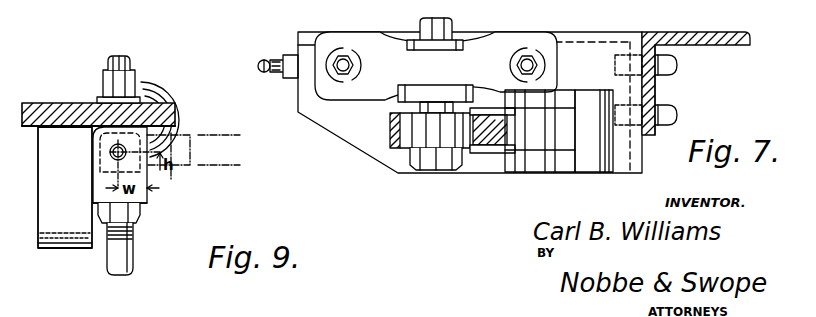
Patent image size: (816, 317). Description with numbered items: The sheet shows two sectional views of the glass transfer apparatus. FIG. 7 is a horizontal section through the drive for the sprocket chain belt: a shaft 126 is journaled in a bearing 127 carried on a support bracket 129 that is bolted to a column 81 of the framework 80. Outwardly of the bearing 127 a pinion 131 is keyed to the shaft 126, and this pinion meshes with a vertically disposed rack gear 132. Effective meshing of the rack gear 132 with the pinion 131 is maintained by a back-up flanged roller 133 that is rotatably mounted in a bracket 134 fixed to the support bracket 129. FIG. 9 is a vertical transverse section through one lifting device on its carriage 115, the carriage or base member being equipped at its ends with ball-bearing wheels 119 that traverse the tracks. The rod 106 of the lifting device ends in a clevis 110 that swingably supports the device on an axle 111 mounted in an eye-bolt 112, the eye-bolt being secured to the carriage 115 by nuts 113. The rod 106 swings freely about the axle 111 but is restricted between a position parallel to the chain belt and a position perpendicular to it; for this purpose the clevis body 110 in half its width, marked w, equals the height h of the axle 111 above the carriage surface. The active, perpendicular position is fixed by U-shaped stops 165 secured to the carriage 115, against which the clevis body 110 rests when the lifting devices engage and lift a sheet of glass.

In FIG. 7, the framework 80 is at (738, 42).
In FIG. 7, the column 81 is at (698, 46).
In FIG. 9, the rod 106 is at (118, 250).
In FIG. 9, the clevis 110 is at (147, 199).
In FIG. 9, the axle 111 is at (110, 152).
In FIG. 9, the eye-bolt 112 is at (97, 168).
In FIG. 9, the nuts 113 is at (134, 80).
In FIG. 9, the carriage 115 is at (59, 108).
In FIG. 9, the ball-bearing wheels 119 is at (168, 97).
In FIG. 7, the shaft 126 is at (434, 30).
In FIG. 7, the bearing 127 is at (405, 62).
In FIG. 7, the support bracket 129 is at (365, 122).
In FIG. 7, the pinion 131 is at (403, 135).
In FIG. 7, the rack gear 132 is at (490, 150).
In FIG. 7, the back-up flanged roller 133 is at (535, 138).
In FIG. 7, the bracket 134 is at (585, 145).
In FIG. 9, the U-shaped stops 165 is at (65, 222).